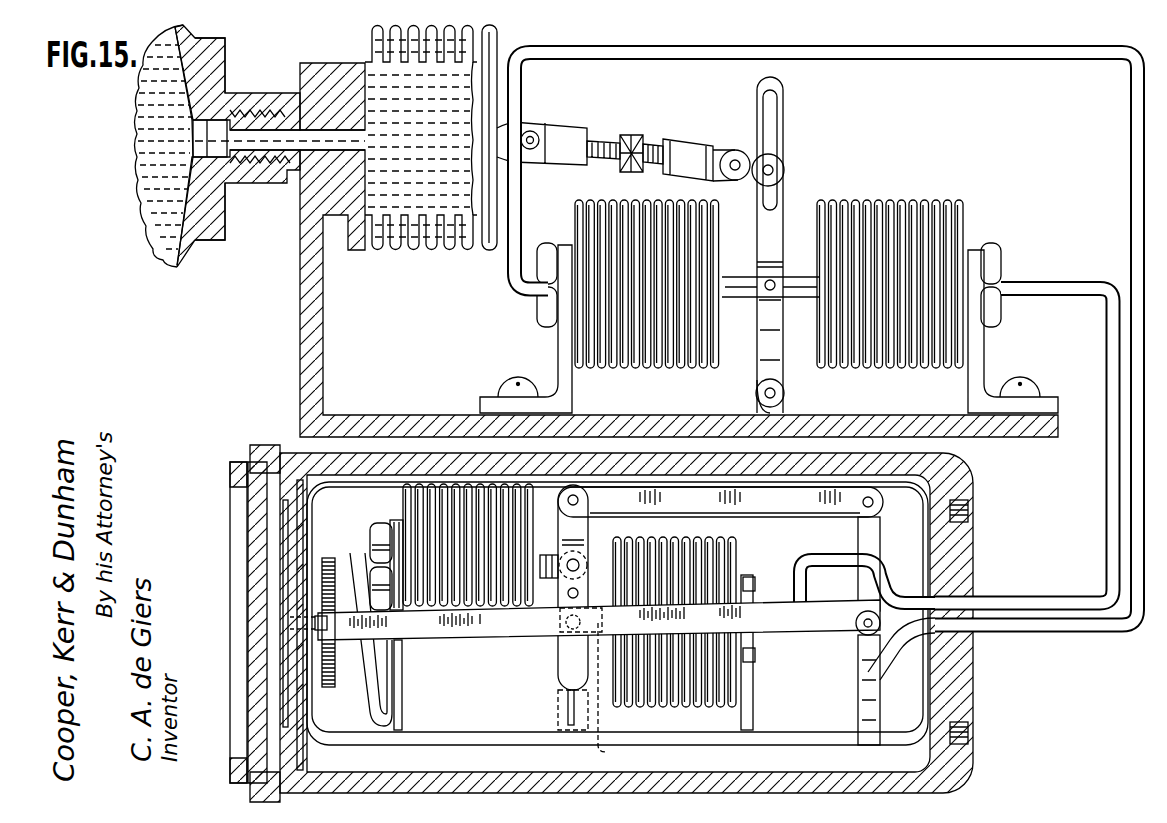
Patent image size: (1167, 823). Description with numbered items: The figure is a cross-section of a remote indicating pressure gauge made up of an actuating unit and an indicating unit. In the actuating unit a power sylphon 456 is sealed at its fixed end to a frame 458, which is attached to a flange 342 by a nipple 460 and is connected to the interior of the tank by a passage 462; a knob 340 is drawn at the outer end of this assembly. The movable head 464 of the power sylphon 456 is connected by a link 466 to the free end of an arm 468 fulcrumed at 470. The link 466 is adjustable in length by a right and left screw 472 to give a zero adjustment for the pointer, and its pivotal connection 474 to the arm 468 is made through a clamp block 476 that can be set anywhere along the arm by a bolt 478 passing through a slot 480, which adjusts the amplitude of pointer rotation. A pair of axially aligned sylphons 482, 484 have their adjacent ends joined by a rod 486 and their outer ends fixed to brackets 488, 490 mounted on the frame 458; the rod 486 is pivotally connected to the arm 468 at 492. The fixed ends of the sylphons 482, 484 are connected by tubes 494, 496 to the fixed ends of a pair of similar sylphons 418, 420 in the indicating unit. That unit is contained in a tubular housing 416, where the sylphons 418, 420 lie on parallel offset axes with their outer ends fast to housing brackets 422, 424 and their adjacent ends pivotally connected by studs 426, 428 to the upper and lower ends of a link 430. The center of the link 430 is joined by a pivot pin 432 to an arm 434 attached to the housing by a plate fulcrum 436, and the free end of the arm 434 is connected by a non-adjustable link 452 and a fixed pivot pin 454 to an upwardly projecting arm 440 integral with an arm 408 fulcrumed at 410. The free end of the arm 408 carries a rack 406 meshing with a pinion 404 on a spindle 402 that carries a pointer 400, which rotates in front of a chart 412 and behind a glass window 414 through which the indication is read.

The knob 340 is at (183, 257).
The flange 342 is at (212, 58).
The pointer 400 is at (283, 518).
The spindle 402 is at (315, 627).
The pinion 404 is at (324, 606).
The rack 406 is at (338, 560).
The arm 408 is at (431, 631).
The fulcrum 410 is at (863, 628).
The chart 412 is at (297, 741).
The glass window 414 is at (253, 688).
The tubular housing 416 is at (972, 473).
The sylphon 418 is at (599, 645).
The sylphon 420 is at (705, 557).
The housing bracket 422 is at (402, 699).
The housing bracket 424 is at (753, 693).
The stud 426 is at (548, 553).
The stud 428 is at (600, 752).
The link 430 is at (584, 542).
The pivot pin 432 is at (567, 598).
The arm 434 is at (563, 670).
The plate fulcrum 436 is at (568, 694).
The upwardly projecting arm 440 is at (880, 537).
The non-adjustable link 452 is at (720, 502).
The pivot pin 454 is at (860, 503).
The power sylphon 456 is at (420, 246).
The frame 458 is at (308, 344).
The nipple 460 is at (263, 166).
The passage 462 is at (247, 140).
The movable head 464 is at (498, 100).
The link 466 is at (548, 128).
The arm 468 is at (765, 366).
The fulcrum 470 is at (786, 392).
The right and left screw 472 is at (603, 138).
The pivotal connection 474 is at (736, 159).
The clamp block 476 is at (740, 183).
The bolt 478 is at (785, 166).
The slot 480 is at (778, 116).
The sylphon 482 is at (622, 366).
The sylphon 484 is at (885, 368).
The rod 486 is at (792, 285).
The bracket 488 is at (558, 344).
The bracket 490 is at (984, 353).
The pivotal connection 492 is at (768, 288).
The tube 494 is at (514, 182).
The tube 496 is at (1035, 294).